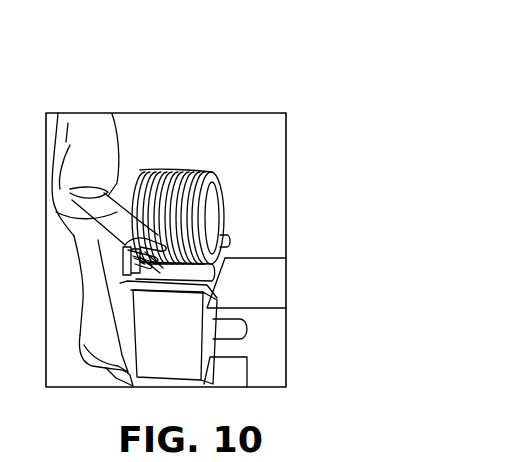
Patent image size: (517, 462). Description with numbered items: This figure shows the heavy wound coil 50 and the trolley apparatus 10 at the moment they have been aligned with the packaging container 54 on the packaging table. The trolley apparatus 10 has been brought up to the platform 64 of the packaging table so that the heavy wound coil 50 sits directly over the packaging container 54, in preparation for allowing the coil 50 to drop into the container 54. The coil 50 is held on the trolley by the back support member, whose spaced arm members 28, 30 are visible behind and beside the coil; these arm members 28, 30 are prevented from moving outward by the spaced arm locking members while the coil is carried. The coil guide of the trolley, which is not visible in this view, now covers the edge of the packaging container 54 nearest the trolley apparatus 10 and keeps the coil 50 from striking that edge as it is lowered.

The trolley apparatus 10 is at (158, 148).
The heavy wound coil 50 is at (220, 181).
The spaced arm member 28 is at (229, 234).
The spaced arm member 30 is at (200, 283).
The packaging container 54 is at (184, 350).
The platform 64 is at (230, 375).